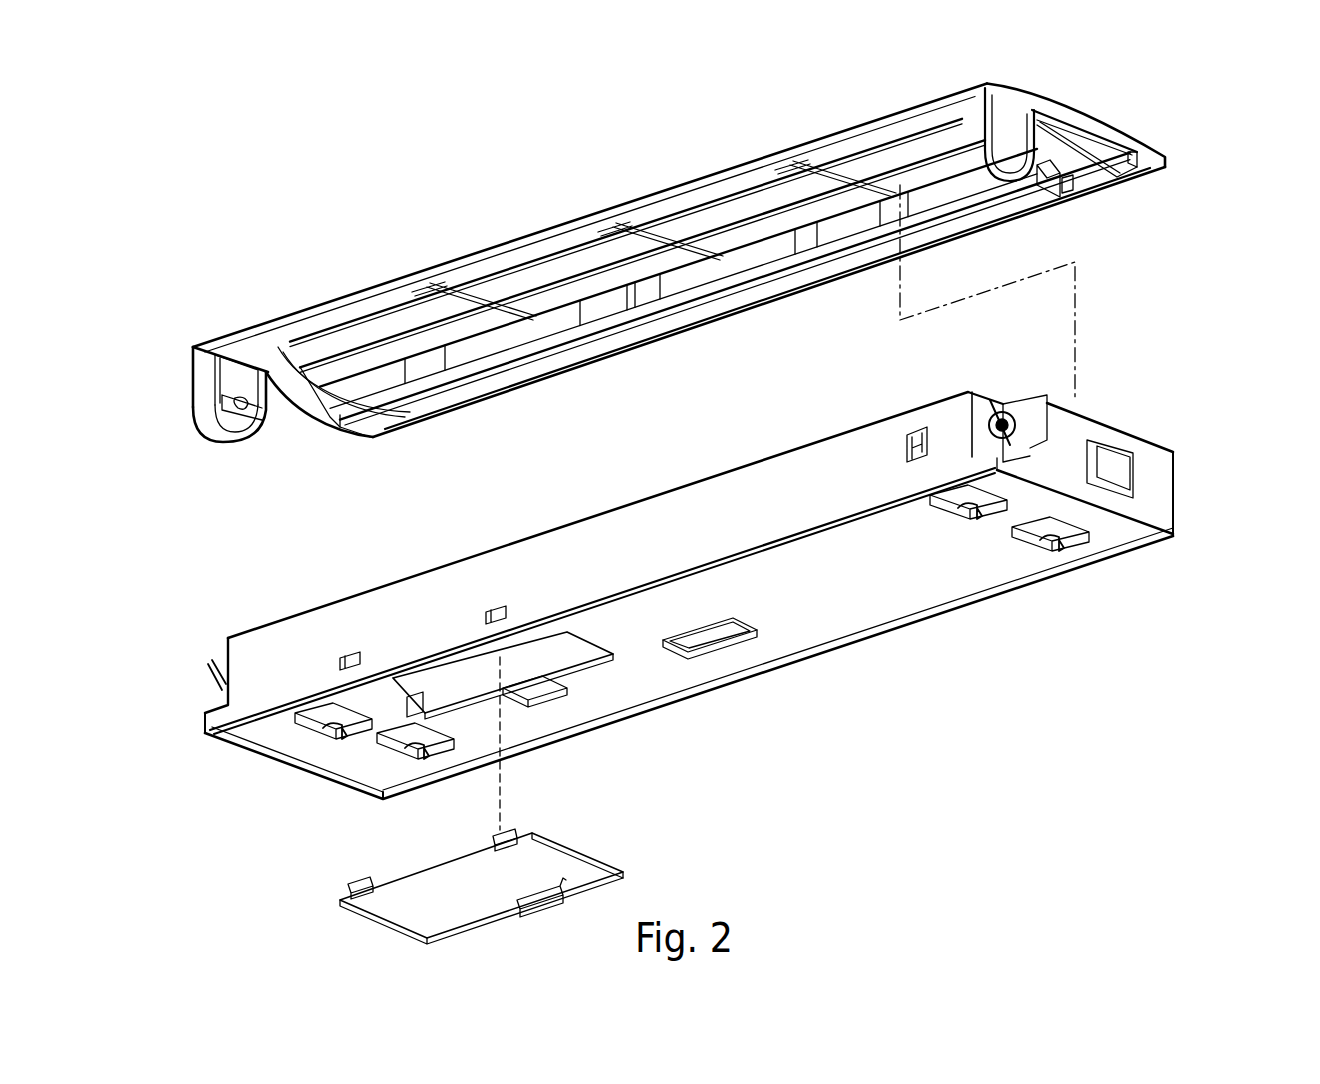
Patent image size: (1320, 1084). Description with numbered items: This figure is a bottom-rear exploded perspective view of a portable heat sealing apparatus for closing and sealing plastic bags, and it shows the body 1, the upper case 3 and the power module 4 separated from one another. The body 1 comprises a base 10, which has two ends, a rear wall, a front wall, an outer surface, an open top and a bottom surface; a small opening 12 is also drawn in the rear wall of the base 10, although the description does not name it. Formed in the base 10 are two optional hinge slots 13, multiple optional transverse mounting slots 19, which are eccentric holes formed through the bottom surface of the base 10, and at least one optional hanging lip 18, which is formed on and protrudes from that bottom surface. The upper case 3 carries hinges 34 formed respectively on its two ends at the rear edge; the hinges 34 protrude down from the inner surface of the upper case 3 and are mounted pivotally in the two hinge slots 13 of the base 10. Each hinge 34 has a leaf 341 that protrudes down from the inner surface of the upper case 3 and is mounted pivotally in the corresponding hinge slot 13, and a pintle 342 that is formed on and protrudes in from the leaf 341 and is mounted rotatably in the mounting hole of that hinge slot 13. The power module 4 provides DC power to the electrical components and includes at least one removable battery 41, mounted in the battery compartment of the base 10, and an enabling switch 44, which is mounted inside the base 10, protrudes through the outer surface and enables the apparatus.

The body 1 is at (975, 684).
The upper case 3 is at (1214, 154).
The power module 4 is at (452, 695).
The base 10 is at (315, 625).
The slot 12 is at (905, 440).
The hinge slots 13 is at (195, 660).
The hanging lip 18 is at (708, 655).
The transverse mounting slots 19 is at (945, 498).
The hinges 34 is at (207, 364).
The battery 41 is at (448, 662).
The enabling switch 44 is at (1115, 468).
The leaf 341 is at (213, 423).
The pintle 342 is at (268, 413).